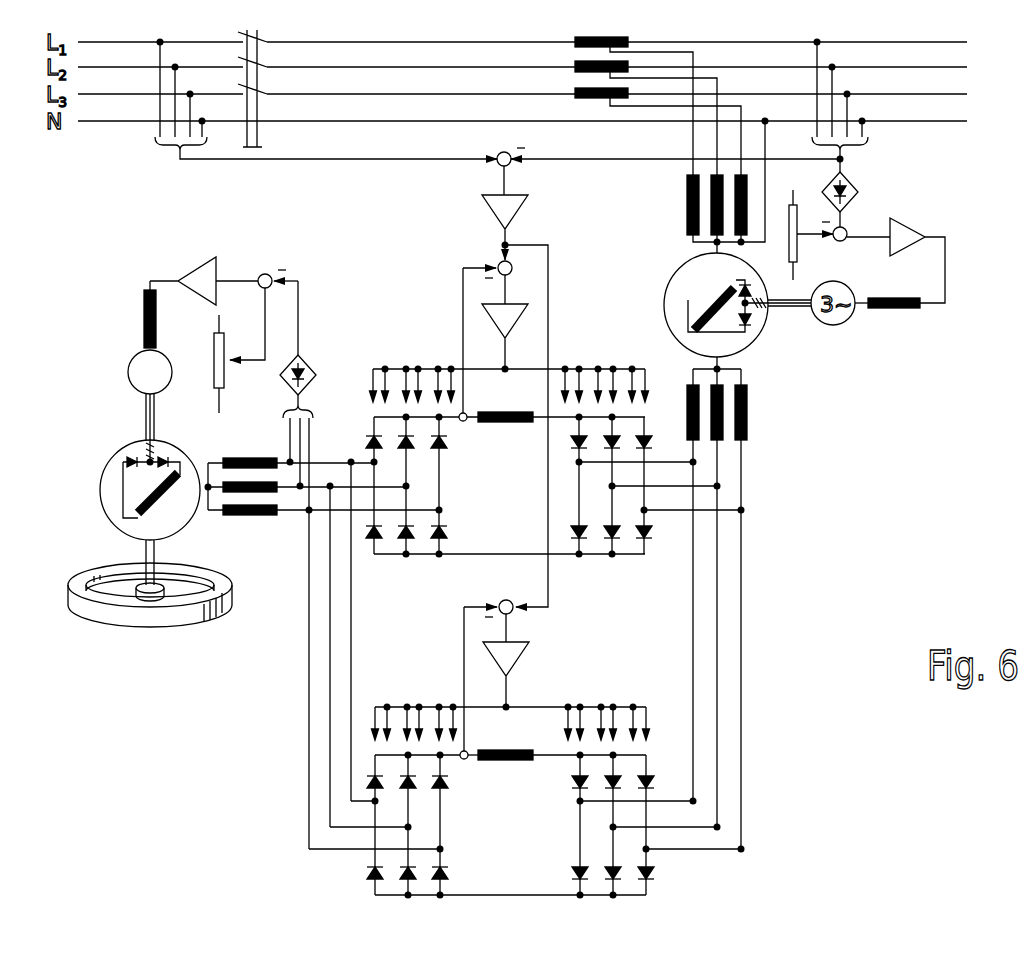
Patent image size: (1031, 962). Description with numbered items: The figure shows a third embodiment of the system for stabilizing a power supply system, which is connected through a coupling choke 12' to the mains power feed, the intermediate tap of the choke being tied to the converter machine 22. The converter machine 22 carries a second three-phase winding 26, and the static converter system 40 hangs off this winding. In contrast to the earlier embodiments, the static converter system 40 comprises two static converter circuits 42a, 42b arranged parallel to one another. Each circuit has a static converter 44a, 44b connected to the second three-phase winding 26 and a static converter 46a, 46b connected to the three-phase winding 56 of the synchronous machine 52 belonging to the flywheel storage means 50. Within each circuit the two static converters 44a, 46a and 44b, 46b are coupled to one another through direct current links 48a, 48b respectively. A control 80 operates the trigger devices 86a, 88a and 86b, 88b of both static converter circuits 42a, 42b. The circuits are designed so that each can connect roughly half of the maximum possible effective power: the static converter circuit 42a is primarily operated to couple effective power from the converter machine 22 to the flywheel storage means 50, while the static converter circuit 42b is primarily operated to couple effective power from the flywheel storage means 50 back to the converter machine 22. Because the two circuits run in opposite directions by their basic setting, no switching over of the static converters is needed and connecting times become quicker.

The coupling choke 12' is at (537, 96).
The converter machine 22 is at (774, 351).
The second three-phase winding 26 is at (754, 411).
The static converter system 40 is at (658, 646).
The static converter circuit 42a is at (607, 464).
The static converter circuit 42b is at (565, 780).
The static converter 44a is at (598, 558).
The static converter 44b is at (598, 893).
The static converter 46a is at (388, 558).
The static converter 46b is at (385, 886).
The direct current link 48a is at (500, 553).
The direct current link 48b is at (500, 894).
The flywheel storage means 50 is at (501, 424).
The synchronous machine 52 is at (106, 523).
The three-phase winding 56 is at (265, 521).
The control 80 is at (482, 257).
The trigger device 86a is at (595, 372).
The trigger device 86b is at (613, 713).
The trigger device 88a is at (395, 380).
The trigger device 88b is at (400, 713).